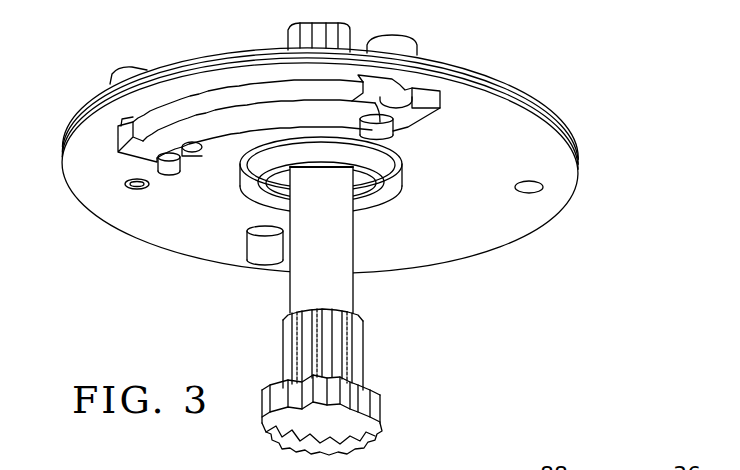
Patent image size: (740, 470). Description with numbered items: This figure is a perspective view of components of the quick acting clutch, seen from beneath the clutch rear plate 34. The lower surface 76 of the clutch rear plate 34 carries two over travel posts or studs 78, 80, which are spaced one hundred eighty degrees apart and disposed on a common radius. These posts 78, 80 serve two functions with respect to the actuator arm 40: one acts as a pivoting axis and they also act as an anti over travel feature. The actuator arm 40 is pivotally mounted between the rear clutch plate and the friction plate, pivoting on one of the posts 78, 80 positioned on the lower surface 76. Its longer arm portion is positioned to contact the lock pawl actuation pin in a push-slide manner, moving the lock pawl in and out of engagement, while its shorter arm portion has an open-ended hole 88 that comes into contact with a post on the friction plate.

The clutch rear plate 34 is at (540, 153).
The actuator arm 40 is at (123, 161).
The lower surface 76 is at (494, 174).
The over travel post 78 is at (378, 128).
The over travel post 80 is at (263, 256).
The open-ended hole 88 is at (405, 97).